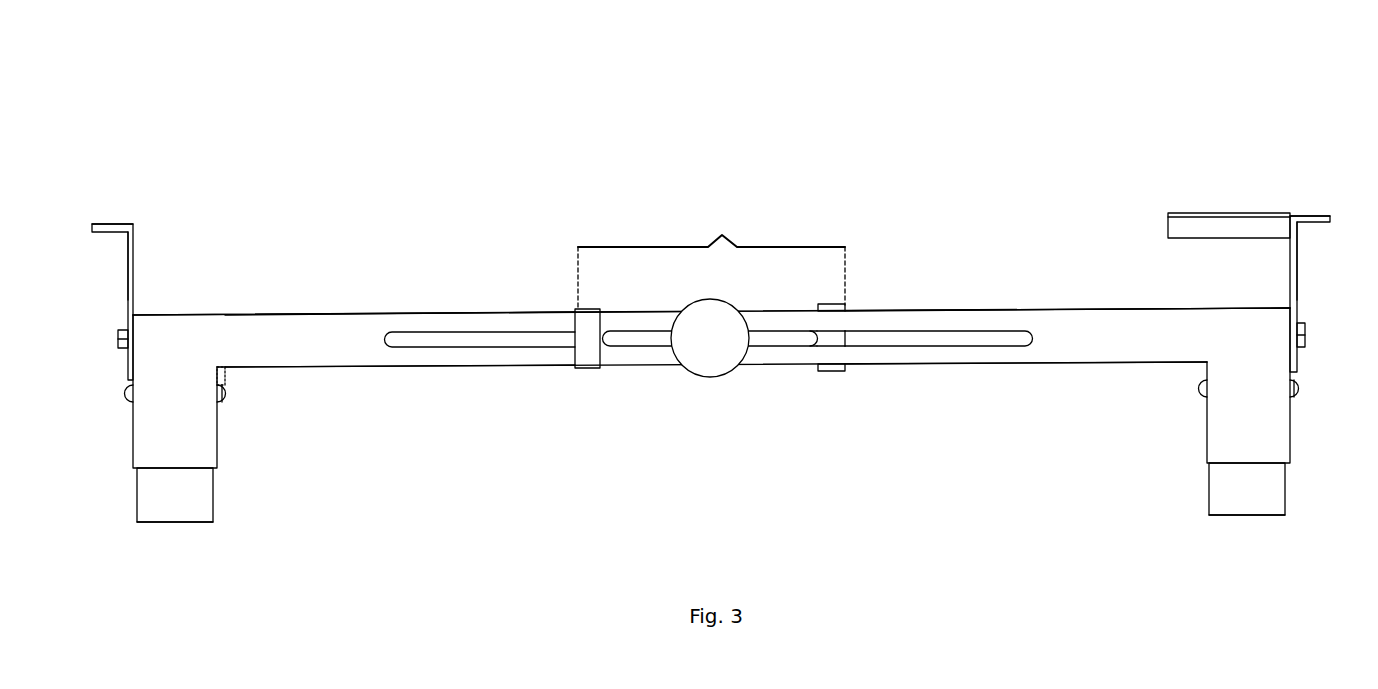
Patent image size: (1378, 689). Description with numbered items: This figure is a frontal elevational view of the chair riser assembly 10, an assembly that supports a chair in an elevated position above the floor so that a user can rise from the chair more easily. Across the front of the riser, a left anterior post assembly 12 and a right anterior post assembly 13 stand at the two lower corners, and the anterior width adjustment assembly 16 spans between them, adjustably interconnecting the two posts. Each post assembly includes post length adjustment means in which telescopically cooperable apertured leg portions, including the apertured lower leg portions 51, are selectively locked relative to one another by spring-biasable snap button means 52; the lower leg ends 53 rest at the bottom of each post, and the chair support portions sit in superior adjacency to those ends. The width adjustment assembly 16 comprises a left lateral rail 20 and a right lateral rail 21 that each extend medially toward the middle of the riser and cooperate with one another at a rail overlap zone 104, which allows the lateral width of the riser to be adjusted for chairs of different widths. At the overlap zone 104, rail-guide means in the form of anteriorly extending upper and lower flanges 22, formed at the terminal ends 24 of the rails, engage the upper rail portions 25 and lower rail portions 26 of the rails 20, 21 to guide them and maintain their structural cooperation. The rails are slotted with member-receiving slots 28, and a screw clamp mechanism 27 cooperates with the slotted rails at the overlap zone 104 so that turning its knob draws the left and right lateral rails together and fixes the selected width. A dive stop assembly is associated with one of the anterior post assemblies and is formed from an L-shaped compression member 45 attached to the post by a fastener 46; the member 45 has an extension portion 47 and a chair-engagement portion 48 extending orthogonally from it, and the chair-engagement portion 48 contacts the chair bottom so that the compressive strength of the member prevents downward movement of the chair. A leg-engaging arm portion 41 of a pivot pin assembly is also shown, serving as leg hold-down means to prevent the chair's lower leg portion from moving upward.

The chair riser assembly 10 is at (1132, 99).
The left anterior post assembly 12 is at (1228, 548).
The right anterior post assembly 13 is at (163, 542).
The anterior width adjustment assembly 16 is at (648, 453).
The left lateral rail 20 is at (1053, 309).
The right lateral rail 21 is at (268, 325).
The anteriorly extending upper and lower flanges 22 is at (818, 306).
The terminal ends 24 is at (574, 384).
The upper rail portions 25 is at (414, 312).
The lower rail portions 26 is at (410, 368).
The screw clamp mechanism 27 is at (717, 365).
The member-receiving slots 28 is at (480, 343).
The leg-engaging arm portion 41 is at (1170, 211).
The L-shaped compression member 45 is at (122, 235).
The fastener 46 is at (117, 345).
The extension portion 47 is at (138, 272).
The chair-engagement portion 48 is at (112, 222).
The apertured lower leg portions 51 is at (213, 520).
The spring-biasable snap button means 52 is at (235, 395).
The lower leg ends 53 is at (146, 524).
The rail overlap zone 104 is at (711, 259).